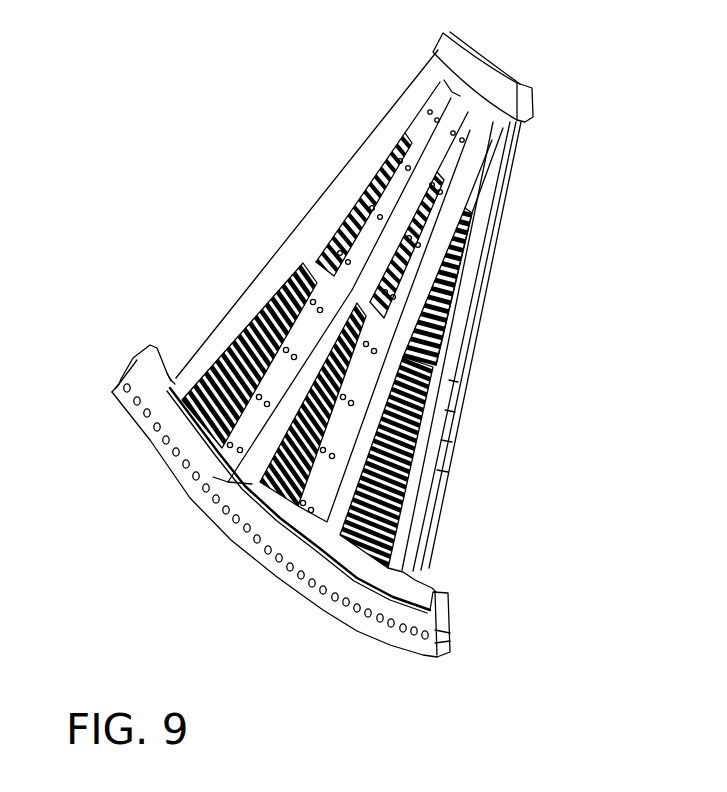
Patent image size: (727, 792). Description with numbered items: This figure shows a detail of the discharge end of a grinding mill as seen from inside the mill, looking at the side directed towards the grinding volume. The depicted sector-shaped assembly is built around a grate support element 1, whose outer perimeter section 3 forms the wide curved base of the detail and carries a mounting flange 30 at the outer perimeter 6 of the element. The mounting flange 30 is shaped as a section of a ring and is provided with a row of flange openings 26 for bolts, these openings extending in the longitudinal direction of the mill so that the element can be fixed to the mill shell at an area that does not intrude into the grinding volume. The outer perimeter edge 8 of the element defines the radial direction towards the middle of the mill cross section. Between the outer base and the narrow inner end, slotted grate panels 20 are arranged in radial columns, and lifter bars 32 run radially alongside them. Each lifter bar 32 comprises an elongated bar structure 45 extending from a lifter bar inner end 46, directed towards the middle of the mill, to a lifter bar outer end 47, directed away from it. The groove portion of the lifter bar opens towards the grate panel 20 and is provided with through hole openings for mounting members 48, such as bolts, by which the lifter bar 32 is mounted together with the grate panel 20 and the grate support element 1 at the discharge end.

The grate support element 1 is at (185, 543).
The outer perimeter section 3 is at (315, 593).
The outer perimeter 6 is at (447, 653).
The outer perimeter edge 8 is at (177, 490).
The grate panel 20 is at (397, 473).
The flange openings 26 is at (127, 387).
The mounting flange 30 is at (168, 428).
The lifter bar 32 is at (428, 296).
The elongated bar structure 45 is at (363, 412).
The lifter bar inner end 46 is at (482, 102).
The lifter bar outer end 47 is at (290, 537).
The mounting member 48 is at (418, 249).